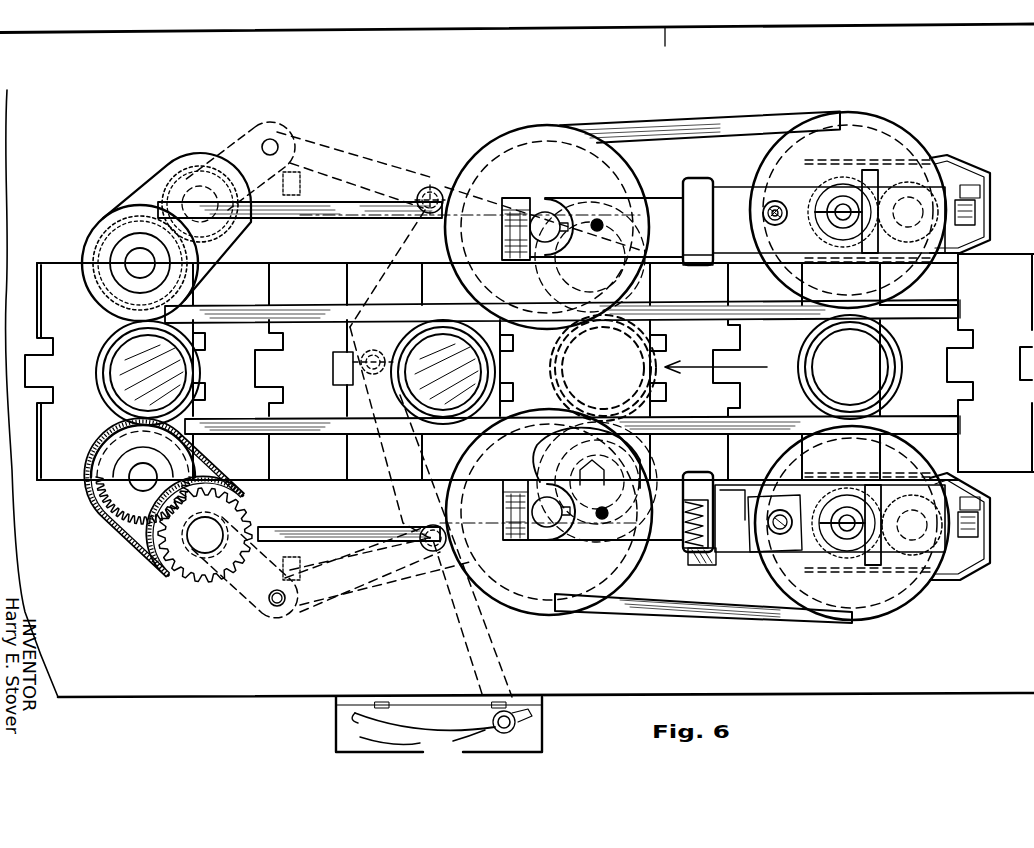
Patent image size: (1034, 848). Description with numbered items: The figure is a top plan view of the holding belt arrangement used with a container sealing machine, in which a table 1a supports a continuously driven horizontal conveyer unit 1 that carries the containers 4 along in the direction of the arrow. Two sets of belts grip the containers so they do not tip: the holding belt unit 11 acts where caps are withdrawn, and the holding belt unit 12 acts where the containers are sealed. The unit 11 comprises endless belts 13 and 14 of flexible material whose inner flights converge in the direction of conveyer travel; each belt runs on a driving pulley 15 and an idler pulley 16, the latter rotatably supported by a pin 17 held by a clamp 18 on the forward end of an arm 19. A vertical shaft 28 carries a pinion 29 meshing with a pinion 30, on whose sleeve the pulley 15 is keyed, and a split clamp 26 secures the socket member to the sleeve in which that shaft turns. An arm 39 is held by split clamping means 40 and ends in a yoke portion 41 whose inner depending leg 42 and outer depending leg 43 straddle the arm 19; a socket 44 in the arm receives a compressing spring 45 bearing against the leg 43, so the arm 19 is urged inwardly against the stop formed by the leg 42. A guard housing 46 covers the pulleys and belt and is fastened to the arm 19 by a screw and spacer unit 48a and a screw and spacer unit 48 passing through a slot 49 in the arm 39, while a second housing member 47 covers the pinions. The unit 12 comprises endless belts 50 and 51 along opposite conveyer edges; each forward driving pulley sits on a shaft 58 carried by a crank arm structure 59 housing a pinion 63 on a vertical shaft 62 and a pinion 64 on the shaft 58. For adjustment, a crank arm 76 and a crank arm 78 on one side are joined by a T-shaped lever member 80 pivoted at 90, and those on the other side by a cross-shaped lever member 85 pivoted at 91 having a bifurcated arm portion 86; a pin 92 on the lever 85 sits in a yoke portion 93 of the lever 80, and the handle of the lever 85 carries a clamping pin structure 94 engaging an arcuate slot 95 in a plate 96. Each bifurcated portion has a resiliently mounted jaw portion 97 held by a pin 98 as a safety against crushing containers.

The conveyer unit 1 is at (997, 262).
The table 1a is at (667, 24).
The containers 4 is at (105, 372).
The holding belt unit 11 is at (708, 115).
The holding belt unit 12 is at (220, 310).
The endless belt 13 is at (765, 310).
The endless belt 14 is at (752, 420).
The driving pulley 15 is at (775, 268).
The idler pulley 16 is at (485, 275).
The pin 17 is at (540, 218).
The clamp 18 is at (512, 205).
The arm 19 is at (565, 205).
The split clamp 26 is at (980, 208).
The vertical shaft 28 is at (925, 258).
The pinion 29 is at (975, 190).
The pinion 30 is at (826, 170).
The arm 39 is at (740, 190).
The split clamping means 40 is at (860, 175).
The yoke portion 41 is at (738, 485).
The inner depending leg 42 is at (693, 185).
The outer depending leg 43 is at (700, 265).
The socket 44 is at (712, 522).
The compressing spring 45 is at (711, 524).
The guard housing 46 is at (762, 530).
The second housing member 47 is at (950, 165).
The screw and spacer unit 48 is at (760, 213).
The screw and spacer unit 48a is at (596, 220).
The slot 49 is at (778, 205).
The endless belt 50 is at (303, 312).
The endless belt 51 is at (303, 425).
The shaft 58 is at (140, 263).
The crank arm structure 59 is at (148, 197).
The vertical shaft 62 is at (207, 533).
The pinion 63 is at (198, 185).
The pinion 64 is at (100, 232).
The crank arm 76 is at (625, 190).
The crank arm 78 is at (245, 160).
The T-shaped lever member 80 is at (367, 178).
The cross-shaped lever member 85 is at (435, 575).
The bifurcated arm portion 86 is at (292, 606).
The pivot 90 is at (432, 190).
The pivot 91 is at (420, 545).
The pin 92 is at (333, 365).
The yoke portion 93 is at (355, 350).
The clamping pin structure 94 is at (535, 725).
The arcuate slot 95 is at (350, 715).
The plate 96 is at (358, 737).
The jaw portion 97 is at (302, 182).
The pin 98 is at (295, 212).